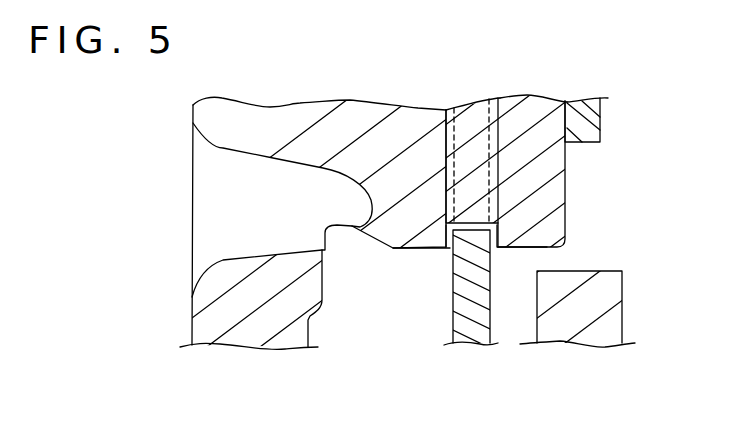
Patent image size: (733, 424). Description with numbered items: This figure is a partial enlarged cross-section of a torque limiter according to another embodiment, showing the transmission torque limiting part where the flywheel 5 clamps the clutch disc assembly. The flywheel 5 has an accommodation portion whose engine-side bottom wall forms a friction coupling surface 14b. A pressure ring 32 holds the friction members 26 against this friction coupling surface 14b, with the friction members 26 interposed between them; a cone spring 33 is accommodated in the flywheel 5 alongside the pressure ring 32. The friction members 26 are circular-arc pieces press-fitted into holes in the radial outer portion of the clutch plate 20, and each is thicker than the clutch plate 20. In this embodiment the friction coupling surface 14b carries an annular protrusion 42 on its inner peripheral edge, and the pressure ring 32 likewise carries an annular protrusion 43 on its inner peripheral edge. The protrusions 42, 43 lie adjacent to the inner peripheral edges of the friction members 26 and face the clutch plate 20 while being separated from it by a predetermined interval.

The flywheel 5 is at (227, 122).
The friction coupling surface 14b is at (449, 128).
The friction member 26 is at (480, 153).
The pressure ring 32 is at (547, 163).
The cone spring 33 is at (590, 113).
The annular protrusion 42 is at (445, 247).
The annular protrusion 43 is at (493, 247).
The clutch plate 20 is at (470, 317).